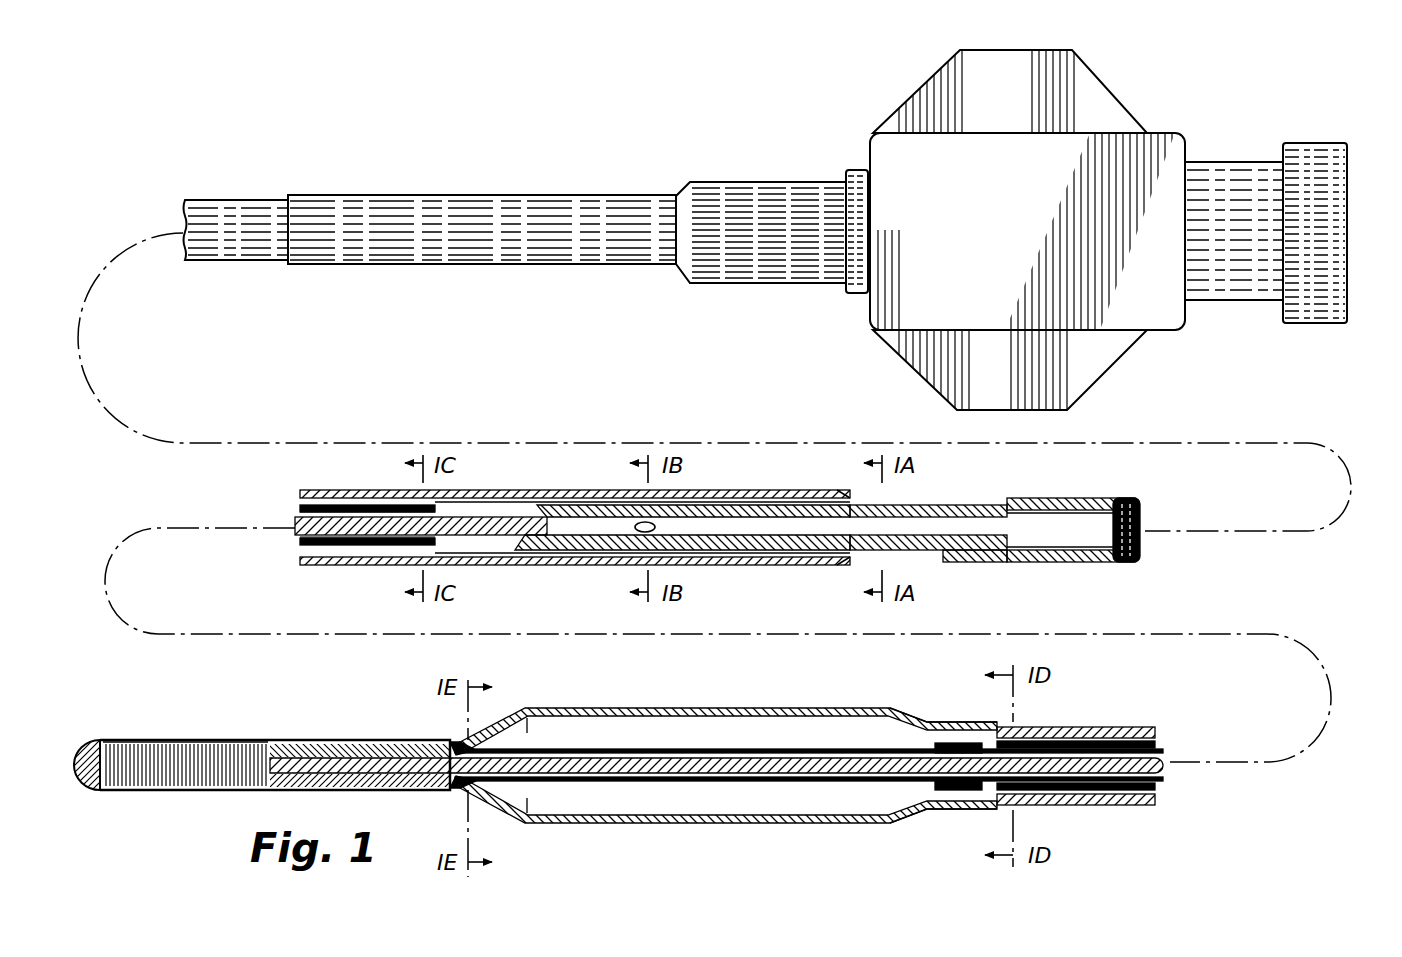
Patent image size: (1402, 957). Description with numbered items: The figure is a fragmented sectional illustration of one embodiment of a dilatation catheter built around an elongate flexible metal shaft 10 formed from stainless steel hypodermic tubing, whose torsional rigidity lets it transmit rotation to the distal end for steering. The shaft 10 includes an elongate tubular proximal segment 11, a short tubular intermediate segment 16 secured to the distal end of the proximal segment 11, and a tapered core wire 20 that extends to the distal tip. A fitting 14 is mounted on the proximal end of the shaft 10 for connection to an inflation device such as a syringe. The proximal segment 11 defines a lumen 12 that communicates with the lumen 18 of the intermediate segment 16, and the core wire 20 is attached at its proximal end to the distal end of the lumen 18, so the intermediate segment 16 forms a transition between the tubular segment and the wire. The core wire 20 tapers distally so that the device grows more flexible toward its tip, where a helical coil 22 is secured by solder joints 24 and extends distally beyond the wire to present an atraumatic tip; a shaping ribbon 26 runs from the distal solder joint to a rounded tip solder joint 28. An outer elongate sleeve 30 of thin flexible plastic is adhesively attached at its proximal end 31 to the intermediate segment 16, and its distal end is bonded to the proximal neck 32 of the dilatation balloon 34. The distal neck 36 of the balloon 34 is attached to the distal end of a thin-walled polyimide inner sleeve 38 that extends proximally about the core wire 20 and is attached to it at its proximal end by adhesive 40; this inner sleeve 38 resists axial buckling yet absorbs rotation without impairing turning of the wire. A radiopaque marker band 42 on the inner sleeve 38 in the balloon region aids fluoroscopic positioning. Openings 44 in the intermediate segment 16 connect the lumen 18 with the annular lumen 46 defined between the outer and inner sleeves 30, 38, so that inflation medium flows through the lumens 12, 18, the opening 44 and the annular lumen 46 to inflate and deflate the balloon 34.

The shaft 10 is at (238, 261).
The proximal segment 11 is at (243, 217).
The lumen 12 is at (1088, 540).
The fitting 14 is at (1056, 252).
The intermediate segment 16 is at (952, 504).
The lumen 18 is at (970, 528).
The core wire 20 is at (291, 527).
The helical coil 22 is at (233, 740).
The solder joints 24 is at (352, 745).
The shaping ribbon 26 is at (207, 791).
The tip solder joint 28 is at (88, 740).
The outer sleeve 30 is at (343, 490).
The proximal end of outer sleeve 31 is at (898, 503).
The proximal neck 32 is at (960, 722).
The dilatation balloon 34 is at (758, 709).
The distal neck 36 is at (465, 739).
The inner sleeve 38 is at (320, 545).
The adhesive 40 is at (440, 538).
The radiopaque marker band 42 is at (948, 790).
The openings 44 is at (637, 531).
The annular lumen 46 is at (500, 510).